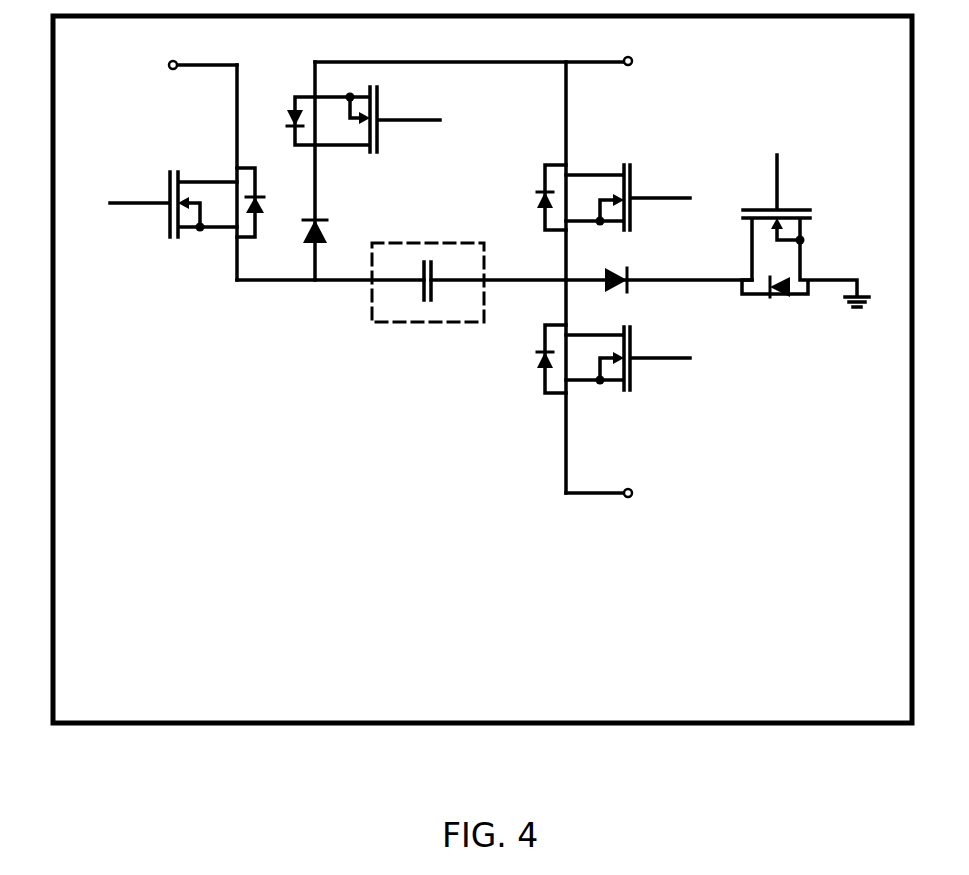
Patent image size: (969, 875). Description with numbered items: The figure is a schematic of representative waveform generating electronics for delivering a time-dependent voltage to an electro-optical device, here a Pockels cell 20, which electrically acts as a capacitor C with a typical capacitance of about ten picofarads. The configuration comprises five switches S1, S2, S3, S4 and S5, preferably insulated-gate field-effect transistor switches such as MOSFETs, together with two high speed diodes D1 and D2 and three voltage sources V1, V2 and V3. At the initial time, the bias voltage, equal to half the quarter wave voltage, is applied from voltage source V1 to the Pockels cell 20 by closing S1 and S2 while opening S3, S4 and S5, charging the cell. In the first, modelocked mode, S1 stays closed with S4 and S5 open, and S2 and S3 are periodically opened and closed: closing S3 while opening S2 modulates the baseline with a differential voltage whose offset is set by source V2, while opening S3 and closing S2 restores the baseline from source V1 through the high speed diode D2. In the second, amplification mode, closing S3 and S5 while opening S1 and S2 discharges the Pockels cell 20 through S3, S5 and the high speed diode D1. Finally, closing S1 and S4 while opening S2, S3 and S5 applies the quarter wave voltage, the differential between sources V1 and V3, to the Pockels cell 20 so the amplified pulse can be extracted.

The Pockels cell 20 is at (371, 315).
The capacitor C is at (428, 262).
The switch S1 is at (170, 183).
The switch S2 is at (778, 204).
The switch S3 is at (631, 188).
The switch S4 is at (631, 352).
The switch S5 is at (379, 110).
The high speed diode D1 is at (317, 217).
The high speed diode D2 is at (632, 274).
The voltage source V1 is at (176, 64).
The voltage source V2 is at (499, 63).
The voltage source V3 is at (625, 494).